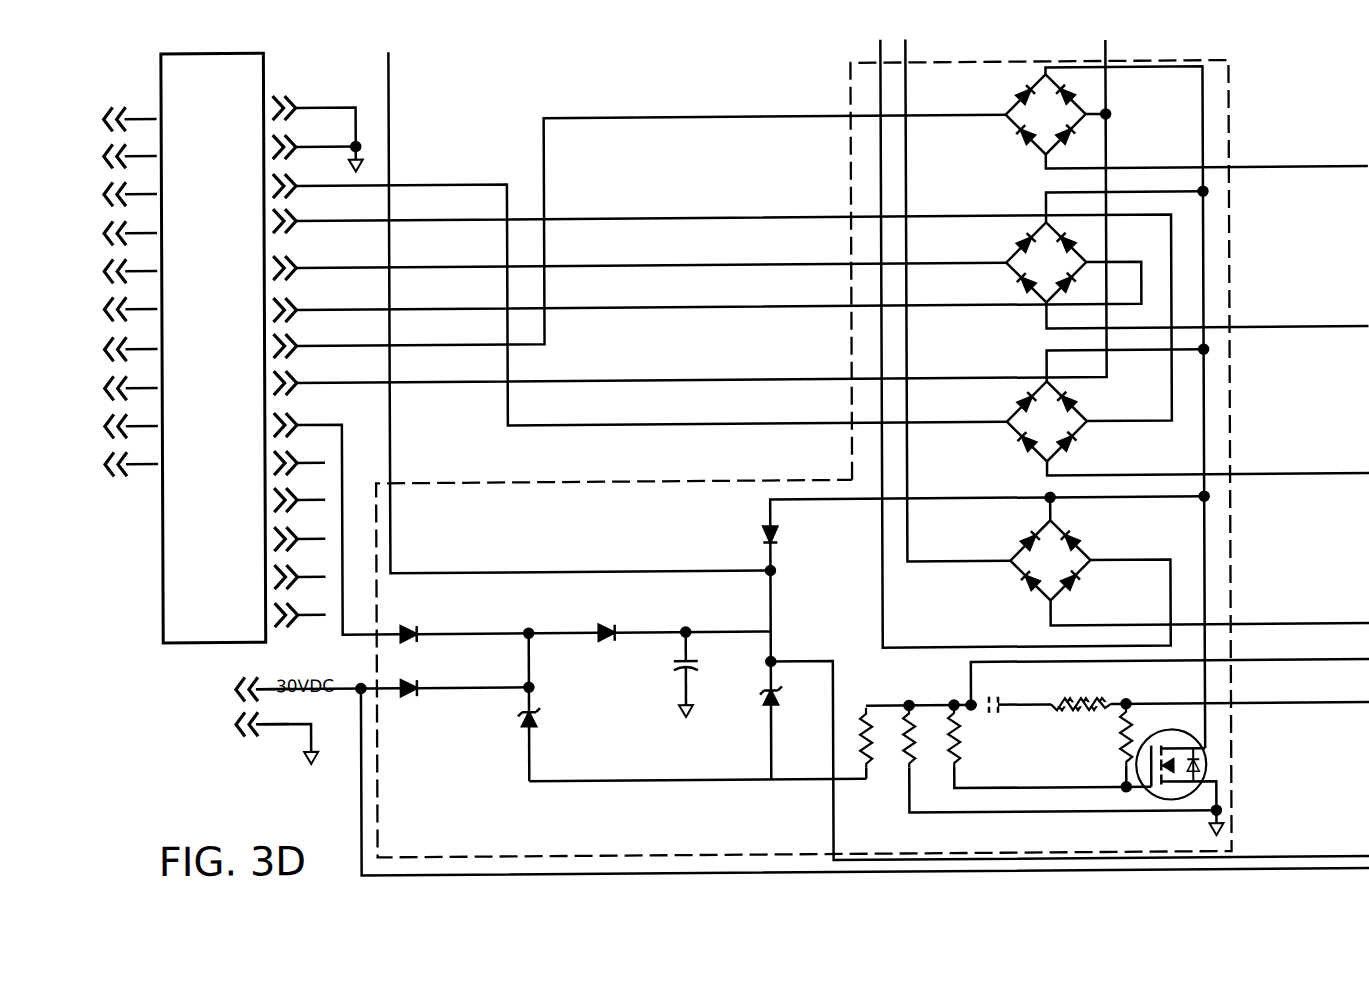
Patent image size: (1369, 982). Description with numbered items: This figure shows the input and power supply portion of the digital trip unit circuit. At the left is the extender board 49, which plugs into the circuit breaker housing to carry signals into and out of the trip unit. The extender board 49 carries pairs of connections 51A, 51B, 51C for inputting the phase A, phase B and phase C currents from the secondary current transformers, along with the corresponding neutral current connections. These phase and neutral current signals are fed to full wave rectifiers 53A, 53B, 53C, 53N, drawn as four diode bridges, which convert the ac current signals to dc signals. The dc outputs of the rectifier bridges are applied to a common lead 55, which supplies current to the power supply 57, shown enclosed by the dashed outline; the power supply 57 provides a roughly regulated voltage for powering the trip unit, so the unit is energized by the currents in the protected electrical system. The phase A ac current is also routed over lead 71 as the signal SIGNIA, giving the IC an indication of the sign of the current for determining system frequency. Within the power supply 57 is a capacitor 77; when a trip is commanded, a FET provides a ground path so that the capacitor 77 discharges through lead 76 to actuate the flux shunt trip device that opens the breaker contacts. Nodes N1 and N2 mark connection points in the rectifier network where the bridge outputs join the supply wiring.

The extender board 49 is at (185, 641).
The phase A current connection pair 51A is at (112, 369).
The phase B current connection pair 51B is at (112, 291).
The phase C current connection pair 51C is at (112, 216).
The phase A full wave rectifier 53A is at (1022, 118).
The phase B full wave rectifier 53B is at (1022, 267).
The phase C full wave rectifier 53C is at (1022, 432).
The neutral full wave rectifier 53N is at (1026, 570).
The common lead 55 is at (1150, 407).
The power supply 57 is at (848, 197).
The SIGNIA lead 71 is at (1110, 86).
The capacitor discharge lead 76 is at (390, 443).
The capacitor 77 is at (680, 663).
The node N1 is at (882, 560).
The node N2 is at (907, 484).